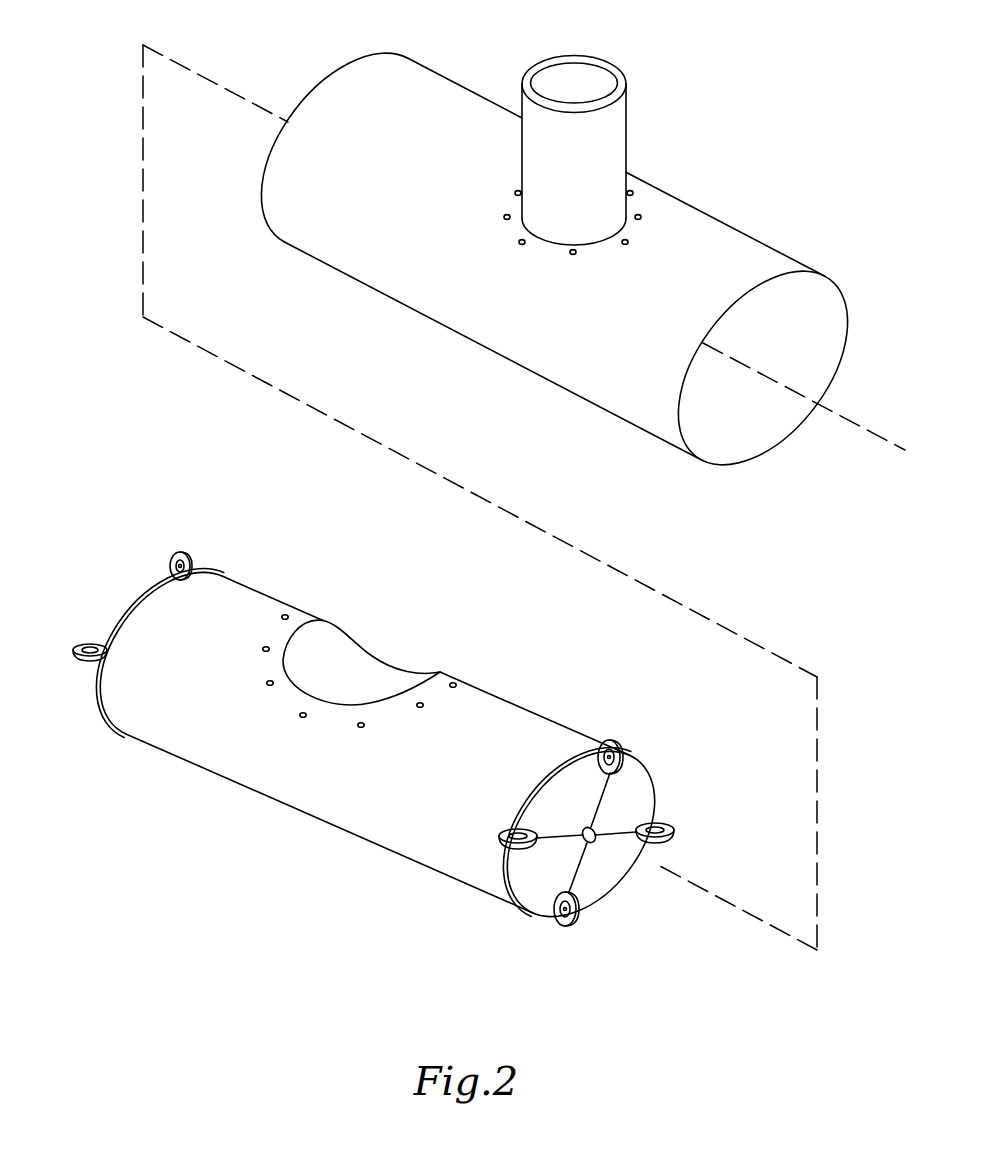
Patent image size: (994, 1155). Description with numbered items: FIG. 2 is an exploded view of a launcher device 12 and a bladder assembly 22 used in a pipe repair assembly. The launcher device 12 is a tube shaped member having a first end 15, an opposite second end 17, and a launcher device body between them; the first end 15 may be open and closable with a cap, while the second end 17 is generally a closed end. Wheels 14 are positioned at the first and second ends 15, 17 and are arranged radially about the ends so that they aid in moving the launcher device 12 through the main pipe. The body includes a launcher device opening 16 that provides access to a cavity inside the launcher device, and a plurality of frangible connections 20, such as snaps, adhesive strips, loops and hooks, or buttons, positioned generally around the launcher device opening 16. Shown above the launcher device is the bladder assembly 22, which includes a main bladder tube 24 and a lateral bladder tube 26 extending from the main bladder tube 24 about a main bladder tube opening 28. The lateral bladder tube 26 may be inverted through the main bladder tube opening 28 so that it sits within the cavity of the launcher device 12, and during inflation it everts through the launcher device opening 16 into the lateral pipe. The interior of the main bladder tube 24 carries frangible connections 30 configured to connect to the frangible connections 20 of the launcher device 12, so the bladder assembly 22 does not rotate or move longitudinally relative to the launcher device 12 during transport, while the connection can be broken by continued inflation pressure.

The launcher device 12 is at (534, 711).
The wheels 14 is at (620, 750).
The first end 15 is at (142, 603).
The launcher device opening 16 is at (355, 668).
The second end 17 is at (598, 877).
The frangible connections 20 is at (422, 703).
The bladder assembly 22 is at (749, 238).
The main bladder tube 24 is at (278, 186).
The lateral bladder tube 26 is at (615, 118).
The main bladder tube opening 28 is at (640, 200).
The frangible connections 30 is at (507, 216).